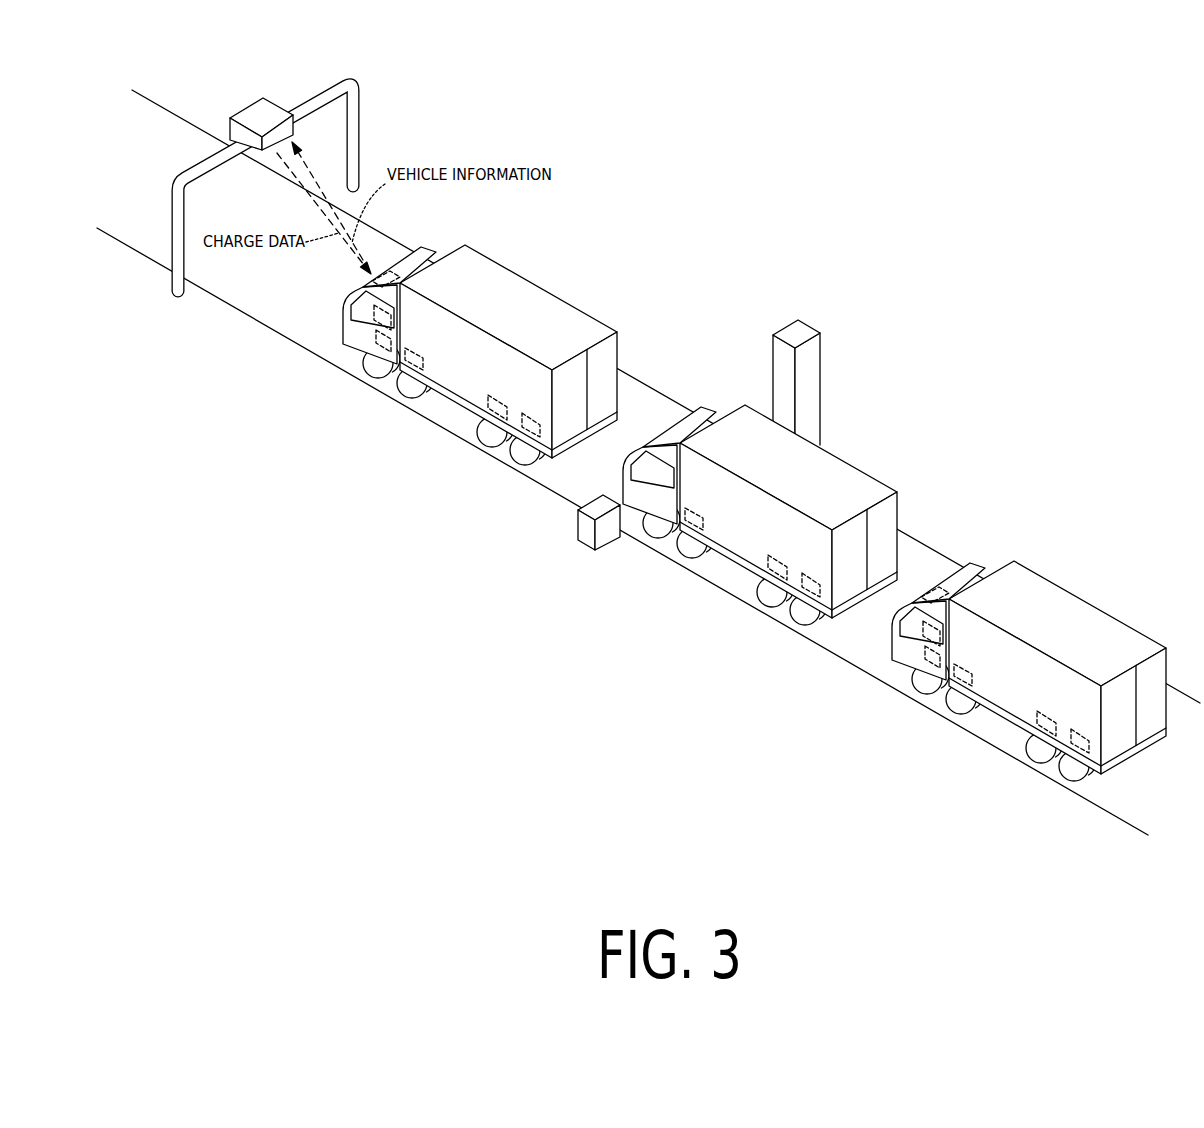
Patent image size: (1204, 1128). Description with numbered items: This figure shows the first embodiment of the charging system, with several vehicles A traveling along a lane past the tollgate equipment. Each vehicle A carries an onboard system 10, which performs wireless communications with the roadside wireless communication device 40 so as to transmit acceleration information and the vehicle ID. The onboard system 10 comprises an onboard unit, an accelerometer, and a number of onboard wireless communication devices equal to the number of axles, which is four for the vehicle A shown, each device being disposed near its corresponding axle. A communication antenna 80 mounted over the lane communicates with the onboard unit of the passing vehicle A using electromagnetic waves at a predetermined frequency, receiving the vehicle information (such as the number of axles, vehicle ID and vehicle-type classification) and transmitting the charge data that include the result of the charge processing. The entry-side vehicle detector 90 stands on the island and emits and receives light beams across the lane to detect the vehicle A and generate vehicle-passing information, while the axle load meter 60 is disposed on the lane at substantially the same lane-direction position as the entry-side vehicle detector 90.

The onboard system 10 is at (480, 355).
The roadside wireless communication device 40 is at (578, 528).
The axle load meter 60 is at (647, 540).
The communication antenna 80 is at (250, 108).
The entry-side vehicle detector 90 is at (822, 360).
The vehicle A is at (1133, 618).